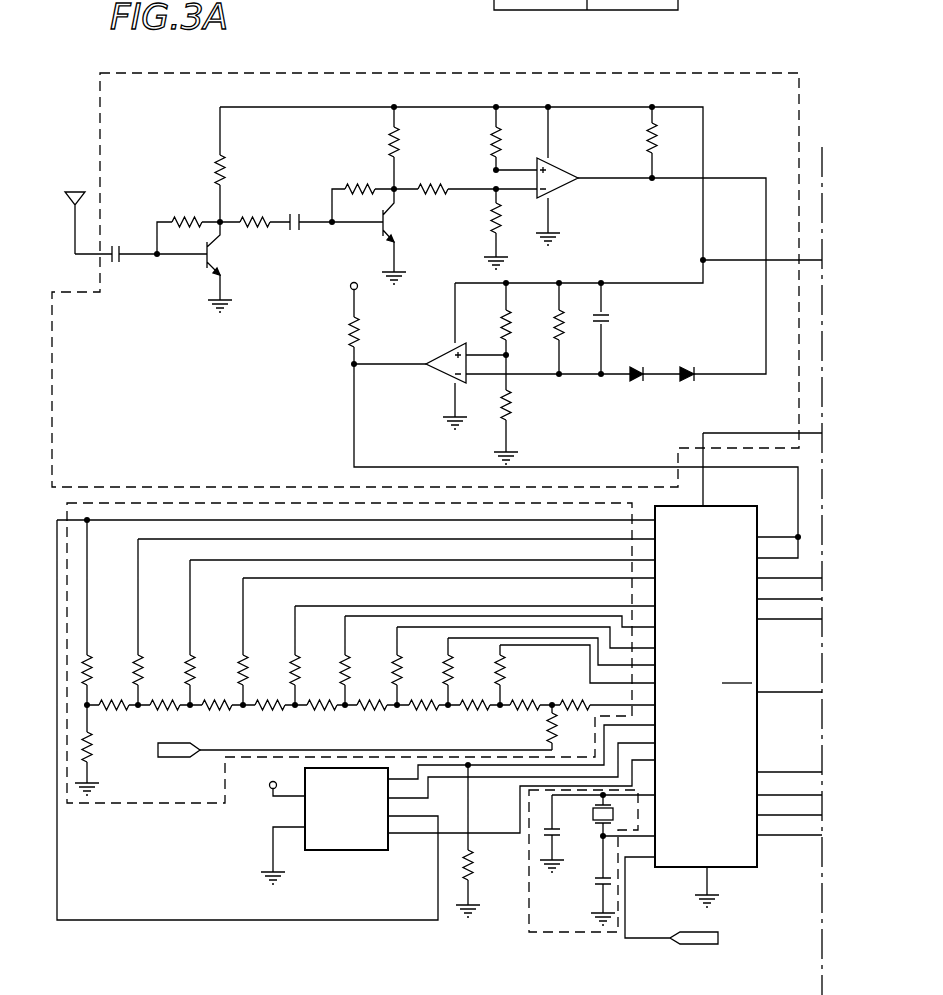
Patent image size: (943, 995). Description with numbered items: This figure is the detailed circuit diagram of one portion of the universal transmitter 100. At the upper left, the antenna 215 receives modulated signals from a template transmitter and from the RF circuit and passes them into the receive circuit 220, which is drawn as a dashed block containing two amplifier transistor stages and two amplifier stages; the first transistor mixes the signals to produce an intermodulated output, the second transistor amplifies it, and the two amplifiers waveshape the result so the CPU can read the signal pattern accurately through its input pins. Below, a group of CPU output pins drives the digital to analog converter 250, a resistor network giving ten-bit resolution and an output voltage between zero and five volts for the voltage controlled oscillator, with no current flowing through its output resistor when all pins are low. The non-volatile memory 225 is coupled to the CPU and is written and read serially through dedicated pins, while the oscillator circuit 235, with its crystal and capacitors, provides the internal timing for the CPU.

The universal transmitter 100 is at (394, 48).
The antenna 215 is at (74, 212).
The receive circuit 220 is at (668, 74).
The non-volatile memory 225 is at (330, 851).
The oscillator circuit 235 is at (560, 932).
The digital to analog converter (DAC) 250 is at (120, 806).